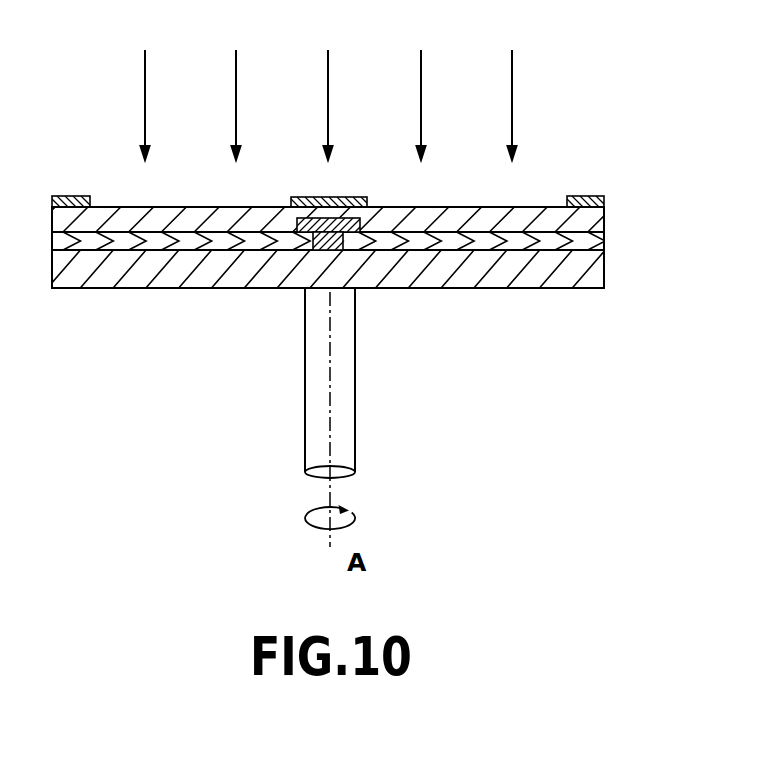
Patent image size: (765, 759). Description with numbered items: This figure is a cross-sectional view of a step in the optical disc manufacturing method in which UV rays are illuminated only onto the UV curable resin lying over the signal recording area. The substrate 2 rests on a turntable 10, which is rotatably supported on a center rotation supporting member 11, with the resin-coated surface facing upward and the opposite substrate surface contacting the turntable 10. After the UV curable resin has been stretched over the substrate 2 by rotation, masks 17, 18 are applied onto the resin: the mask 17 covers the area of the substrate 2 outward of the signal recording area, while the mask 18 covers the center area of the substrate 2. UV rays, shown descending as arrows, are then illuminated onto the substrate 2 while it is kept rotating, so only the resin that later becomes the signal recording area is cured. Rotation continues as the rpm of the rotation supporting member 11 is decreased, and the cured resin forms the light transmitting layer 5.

The substrate 2 is at (592, 241).
The light transmitting layer 5 is at (588, 222).
The turntable 10 is at (590, 275).
The center rotation supporting member 11 is at (345, 386).
The mask 17 is at (80, 196).
The mask 18 is at (352, 197).